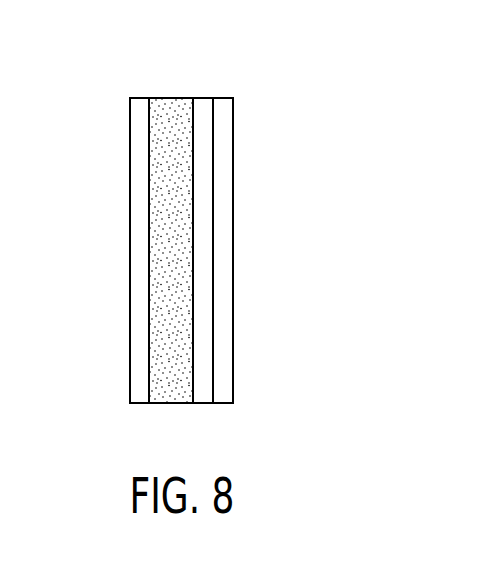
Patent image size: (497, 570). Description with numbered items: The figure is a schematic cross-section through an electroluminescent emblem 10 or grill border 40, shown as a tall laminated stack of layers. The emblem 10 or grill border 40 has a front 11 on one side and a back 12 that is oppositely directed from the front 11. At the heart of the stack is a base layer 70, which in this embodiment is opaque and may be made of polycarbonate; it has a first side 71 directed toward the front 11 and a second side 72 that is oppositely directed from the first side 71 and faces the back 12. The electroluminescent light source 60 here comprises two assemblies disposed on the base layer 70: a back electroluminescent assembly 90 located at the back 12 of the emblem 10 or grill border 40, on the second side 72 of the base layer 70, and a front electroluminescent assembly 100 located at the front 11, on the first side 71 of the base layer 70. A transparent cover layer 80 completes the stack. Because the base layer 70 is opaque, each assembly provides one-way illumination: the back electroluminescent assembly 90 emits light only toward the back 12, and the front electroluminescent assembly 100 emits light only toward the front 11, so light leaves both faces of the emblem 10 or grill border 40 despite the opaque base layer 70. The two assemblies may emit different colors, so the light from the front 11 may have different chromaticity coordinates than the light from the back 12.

The emblem 10 is at (182, 210).
The grill border 40 is at (243, 80).
The front 11 is at (256, 229).
The back 12 is at (109, 229).
The electroluminescent light source 60 is at (177, 272).
The base layer 70 is at (163, 392).
The first side 71 is at (196, 179).
The second side 72 is at (147, 164).
The cover layer 80 is at (225, 388).
The back electroluminescent assembly 90 is at (142, 388).
The front electroluminescent assembly 100 is at (203, 392).